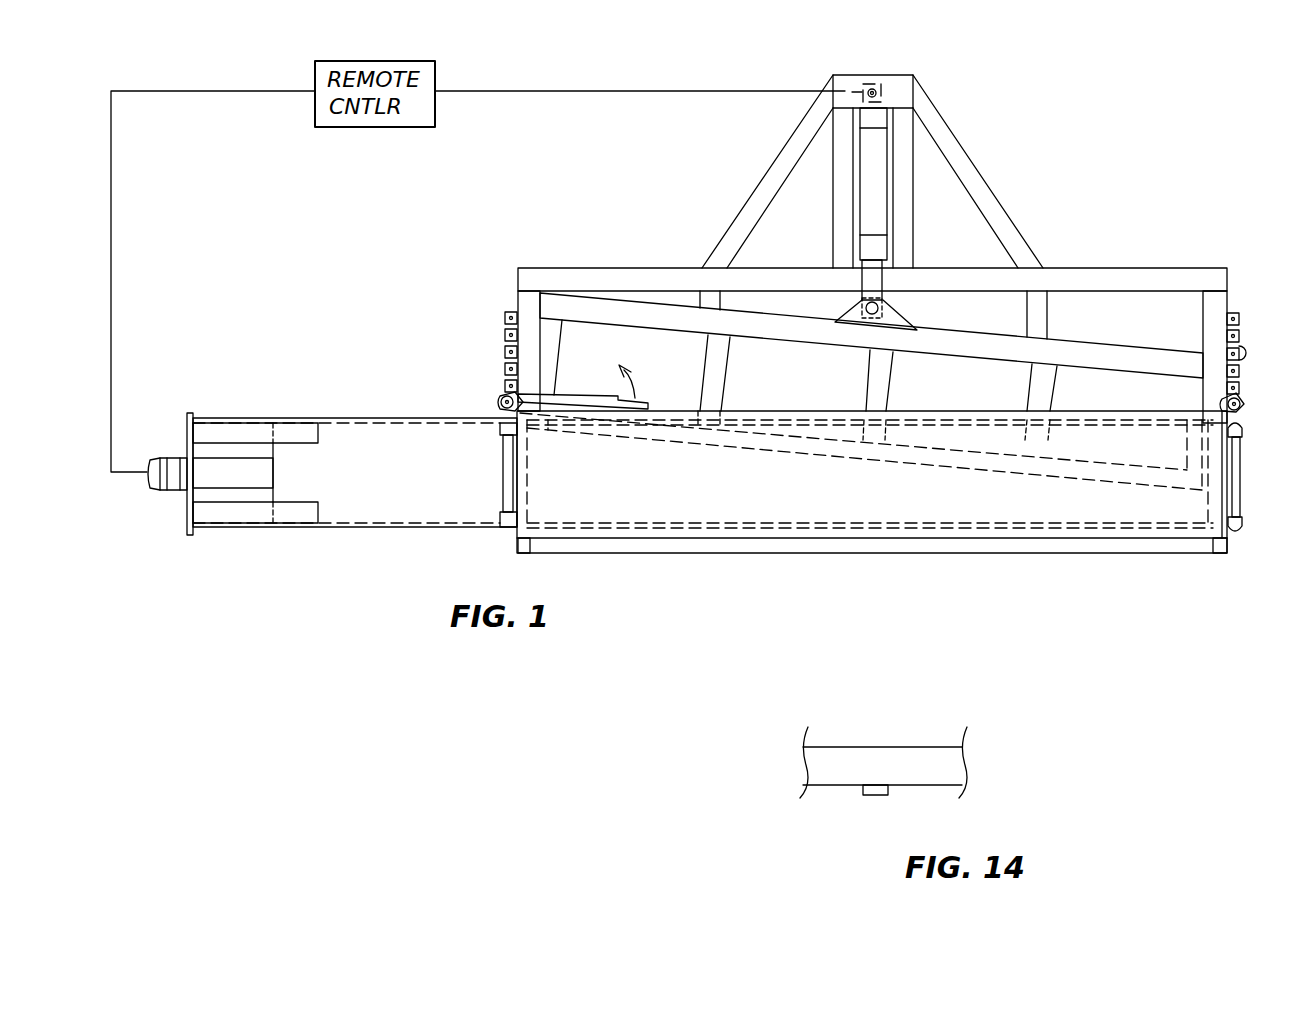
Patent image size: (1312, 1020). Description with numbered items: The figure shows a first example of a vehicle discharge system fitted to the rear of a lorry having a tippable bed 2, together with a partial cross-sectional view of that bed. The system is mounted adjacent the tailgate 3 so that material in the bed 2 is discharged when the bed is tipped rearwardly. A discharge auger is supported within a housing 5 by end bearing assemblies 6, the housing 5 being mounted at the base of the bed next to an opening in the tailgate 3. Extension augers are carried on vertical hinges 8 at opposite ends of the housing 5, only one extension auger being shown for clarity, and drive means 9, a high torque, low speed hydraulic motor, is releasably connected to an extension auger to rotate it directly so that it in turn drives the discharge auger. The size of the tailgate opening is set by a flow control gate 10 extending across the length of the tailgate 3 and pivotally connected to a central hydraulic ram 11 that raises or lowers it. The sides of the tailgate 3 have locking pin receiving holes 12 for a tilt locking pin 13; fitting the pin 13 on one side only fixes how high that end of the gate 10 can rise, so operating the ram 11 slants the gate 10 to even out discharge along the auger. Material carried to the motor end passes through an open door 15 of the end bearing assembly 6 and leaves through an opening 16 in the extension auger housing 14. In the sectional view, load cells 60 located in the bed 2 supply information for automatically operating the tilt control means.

In FIG. 1, the tippable bed 2 is at (717, 543).
In FIG. 14, the tippable bed 2 is at (924, 744).
In FIG. 1, the tailgate 3 is at (1115, 280).
In FIG. 1, the housing 5 is at (815, 540).
In FIG. 1, the end bearing assembly 6 is at (568, 392).
In FIG. 1, the vertical hinge 8 is at (500, 490).
In FIG. 1, the drive means 9 is at (170, 458).
In FIG. 1, the flow control gate 10 is at (677, 322).
In FIG. 1, the central hydraulic ram 11 is at (868, 178).
In FIG. 1, the locking pin receiving holes 12 is at (505, 318).
In FIG. 1, the tilt locking pin 13 is at (1247, 352).
In FIG. 1, the extension auger housing 14 is at (387, 528).
In FIG. 1, the open door 15 is at (507, 400).
In FIG. 1, the opening 16 is at (232, 515).
In FIG. 14, the load cells 60 is at (876, 795).